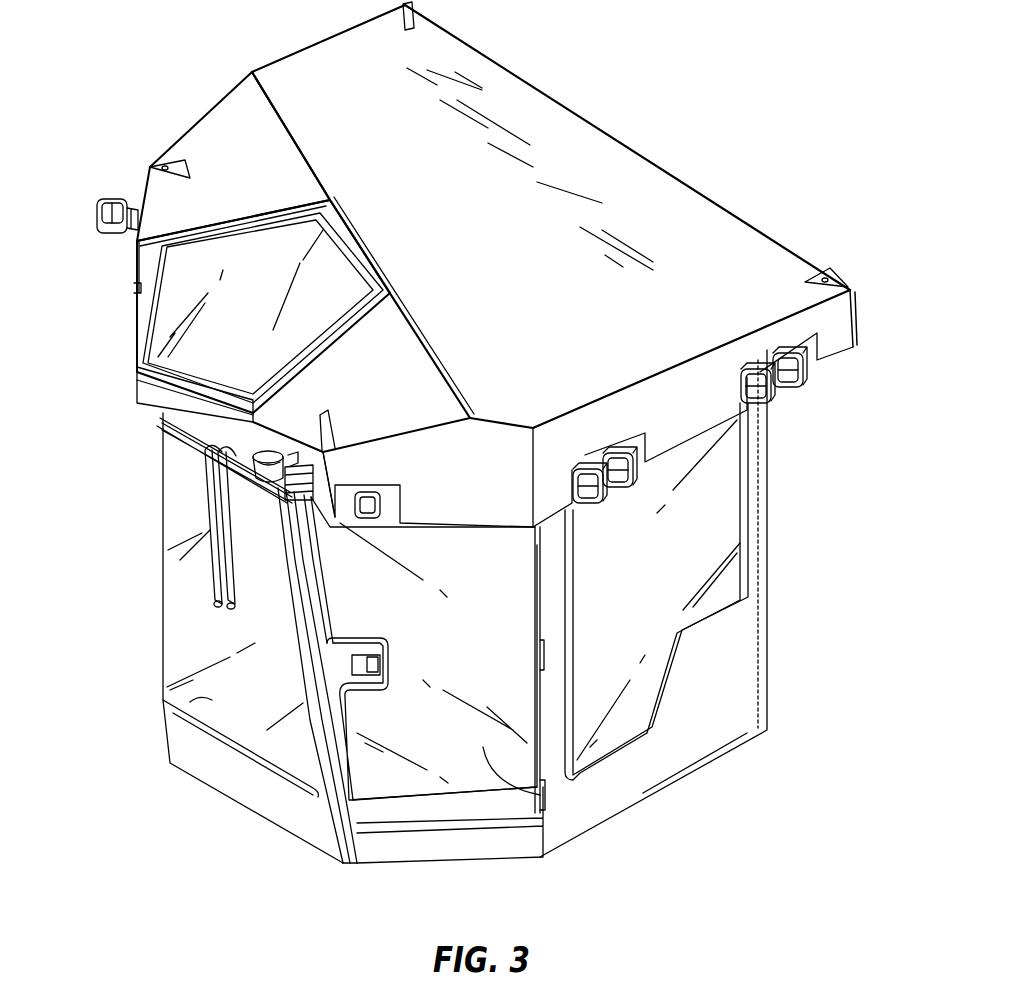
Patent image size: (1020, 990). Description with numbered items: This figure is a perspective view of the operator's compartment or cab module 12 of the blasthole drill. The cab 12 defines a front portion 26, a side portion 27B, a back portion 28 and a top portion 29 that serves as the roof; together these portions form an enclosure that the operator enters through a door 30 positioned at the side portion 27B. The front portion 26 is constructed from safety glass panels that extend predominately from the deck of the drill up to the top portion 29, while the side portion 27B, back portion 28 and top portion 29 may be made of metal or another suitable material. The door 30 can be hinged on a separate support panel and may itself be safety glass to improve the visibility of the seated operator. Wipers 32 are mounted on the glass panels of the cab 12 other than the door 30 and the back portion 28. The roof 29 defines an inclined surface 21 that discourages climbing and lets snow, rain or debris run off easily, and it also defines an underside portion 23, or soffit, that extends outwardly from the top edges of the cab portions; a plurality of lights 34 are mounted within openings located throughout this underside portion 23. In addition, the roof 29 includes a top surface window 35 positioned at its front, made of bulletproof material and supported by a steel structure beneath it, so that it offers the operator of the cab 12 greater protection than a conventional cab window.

The operator's compartment 12 is at (752, 132).
The inclined surface 21 is at (220, 148).
The underside portion 23 is at (838, 372).
The front portion 26 is at (175, 700).
The side portion 27B is at (483, 808).
The back portion 28 is at (660, 570).
The top portion 29 is at (560, 142).
The door 30 is at (548, 802).
The wiper 32 is at (157, 472).
The light 34 is at (121, 232).
The top surface window 35 is at (195, 302).